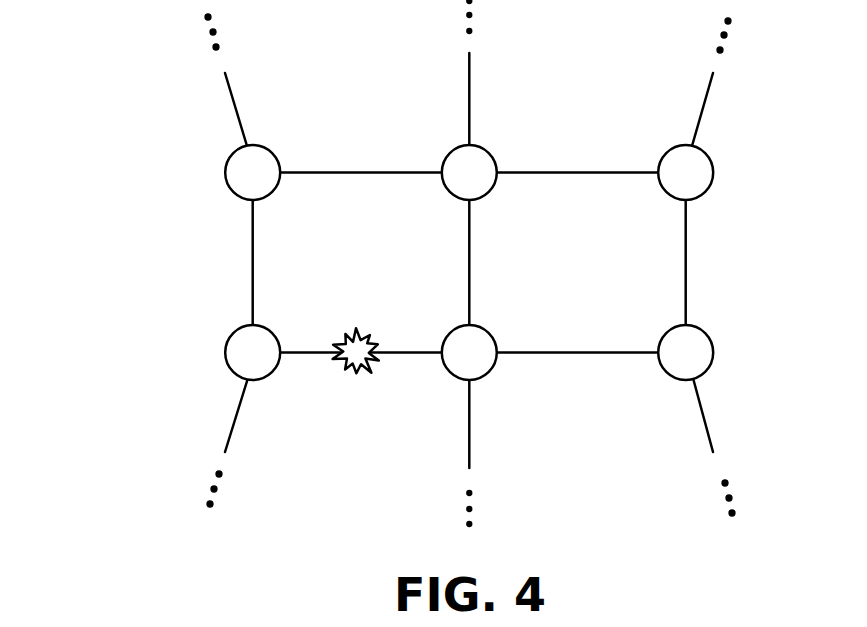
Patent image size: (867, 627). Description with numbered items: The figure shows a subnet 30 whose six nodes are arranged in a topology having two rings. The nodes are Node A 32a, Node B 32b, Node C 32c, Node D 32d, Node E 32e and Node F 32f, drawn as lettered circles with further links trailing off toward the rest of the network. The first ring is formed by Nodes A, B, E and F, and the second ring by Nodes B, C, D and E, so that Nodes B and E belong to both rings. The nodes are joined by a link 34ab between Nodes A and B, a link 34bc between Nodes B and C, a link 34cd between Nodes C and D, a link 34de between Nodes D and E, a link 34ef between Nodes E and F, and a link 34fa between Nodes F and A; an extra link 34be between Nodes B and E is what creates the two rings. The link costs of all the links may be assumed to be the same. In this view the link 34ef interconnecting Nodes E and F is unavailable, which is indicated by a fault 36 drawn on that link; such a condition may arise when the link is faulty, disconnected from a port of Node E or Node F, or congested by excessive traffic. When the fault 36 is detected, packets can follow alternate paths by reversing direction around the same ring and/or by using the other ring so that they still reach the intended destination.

The subnet 30 is at (413, 263).
The node 32a is at (224, 161).
The node 32b is at (493, 155).
The node 32c is at (706, 192).
The node 32d is at (715, 347).
The node 32e is at (488, 370).
The node 32f is at (272, 378).
The link 34ab is at (340, 172).
The link 34bc is at (555, 172).
The link 34cd is at (683, 272).
The link 34de is at (603, 352).
The link 34ef is at (407, 350).
The link 34fa is at (255, 280).
The link 34be is at (467, 282).
The fault 36 is at (345, 373).